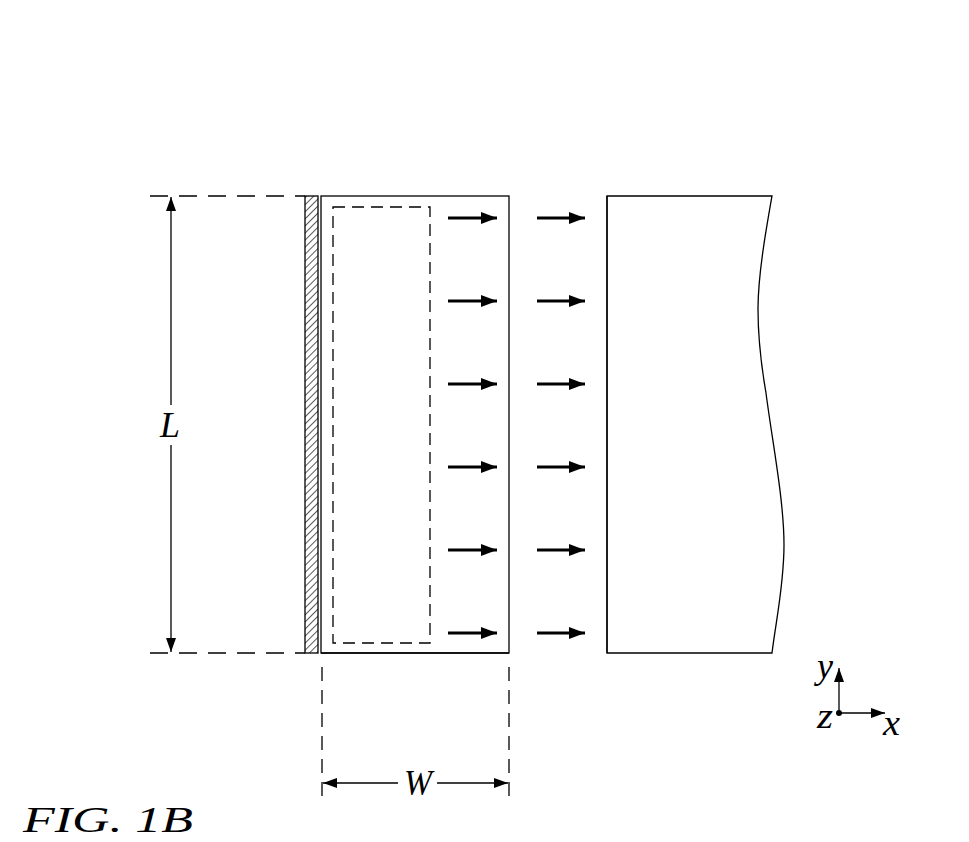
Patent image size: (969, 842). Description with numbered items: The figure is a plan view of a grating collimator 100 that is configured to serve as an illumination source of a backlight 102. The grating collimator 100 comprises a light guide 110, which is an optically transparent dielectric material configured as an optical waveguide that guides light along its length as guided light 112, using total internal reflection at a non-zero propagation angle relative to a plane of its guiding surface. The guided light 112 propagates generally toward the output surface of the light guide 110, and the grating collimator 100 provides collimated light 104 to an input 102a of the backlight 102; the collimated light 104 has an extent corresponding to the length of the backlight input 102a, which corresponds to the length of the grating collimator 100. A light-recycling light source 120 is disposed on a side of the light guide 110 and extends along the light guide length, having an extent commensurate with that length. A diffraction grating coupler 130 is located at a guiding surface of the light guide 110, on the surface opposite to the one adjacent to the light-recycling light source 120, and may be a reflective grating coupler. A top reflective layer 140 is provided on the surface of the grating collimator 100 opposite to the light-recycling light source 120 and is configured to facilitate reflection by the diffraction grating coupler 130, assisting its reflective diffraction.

The grating collimator 100 is at (297, 65).
The backlight 102 is at (690, 196).
The backlight input 102a is at (607, 198).
The collimated light 104 is at (562, 646).
The light guide 110 is at (400, 196).
The guided light 112 is at (477, 207).
The light-recycling light source 120 is at (353, 655).
The diffraction grating coupler 130 is at (372, 418).
The top reflective layer 140 is at (313, 194).